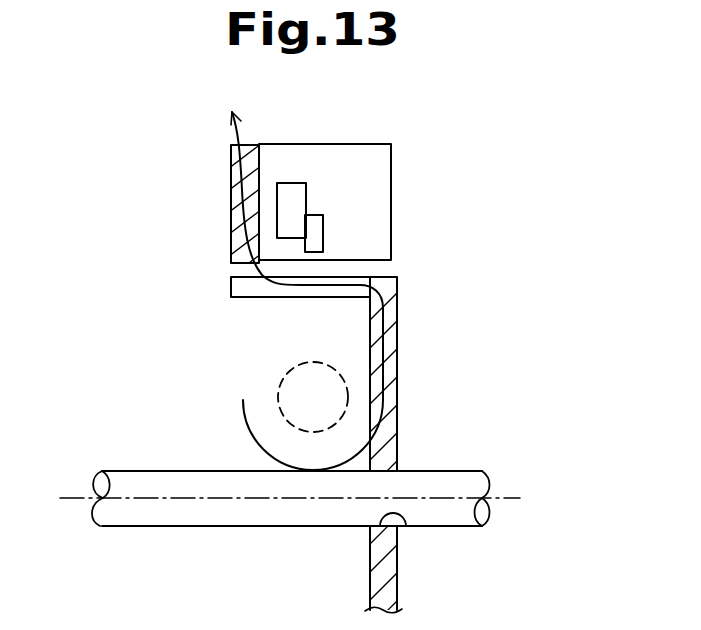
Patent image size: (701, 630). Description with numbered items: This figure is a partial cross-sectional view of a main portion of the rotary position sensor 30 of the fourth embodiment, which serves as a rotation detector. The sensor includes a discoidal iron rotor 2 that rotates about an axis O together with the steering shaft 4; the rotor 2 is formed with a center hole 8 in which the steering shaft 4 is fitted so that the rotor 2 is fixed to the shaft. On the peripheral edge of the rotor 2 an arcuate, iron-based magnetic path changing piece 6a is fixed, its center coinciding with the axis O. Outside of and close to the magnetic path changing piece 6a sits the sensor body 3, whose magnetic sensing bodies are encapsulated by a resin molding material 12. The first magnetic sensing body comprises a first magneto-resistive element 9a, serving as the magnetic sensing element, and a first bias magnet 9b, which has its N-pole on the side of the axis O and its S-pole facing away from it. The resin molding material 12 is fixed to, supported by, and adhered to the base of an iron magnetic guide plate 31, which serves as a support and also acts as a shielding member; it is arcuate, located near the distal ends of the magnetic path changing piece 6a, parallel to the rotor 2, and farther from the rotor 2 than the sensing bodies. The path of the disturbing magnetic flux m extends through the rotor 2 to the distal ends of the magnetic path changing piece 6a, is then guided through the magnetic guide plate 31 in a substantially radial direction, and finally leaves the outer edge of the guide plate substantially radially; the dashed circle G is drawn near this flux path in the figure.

The rotor 2 is at (397, 332).
The sensor body 3 is at (365, 126).
The steering shaft 4 is at (447, 483).
The magnetic path changing piece 6a is at (238, 288).
The center hole 8 is at (405, 523).
The first magneto-resistive element 9a is at (322, 224).
The first bias magnet 9b is at (305, 183).
The resin molding material 12 is at (378, 167).
The rotary position sensor 30 is at (560, 123).
The magnetic guide plate 31 is at (238, 181).
The center of gravity G is at (285, 384).
The disturbing magnetic flux m is at (255, 432).
The axis O is at (73, 498).